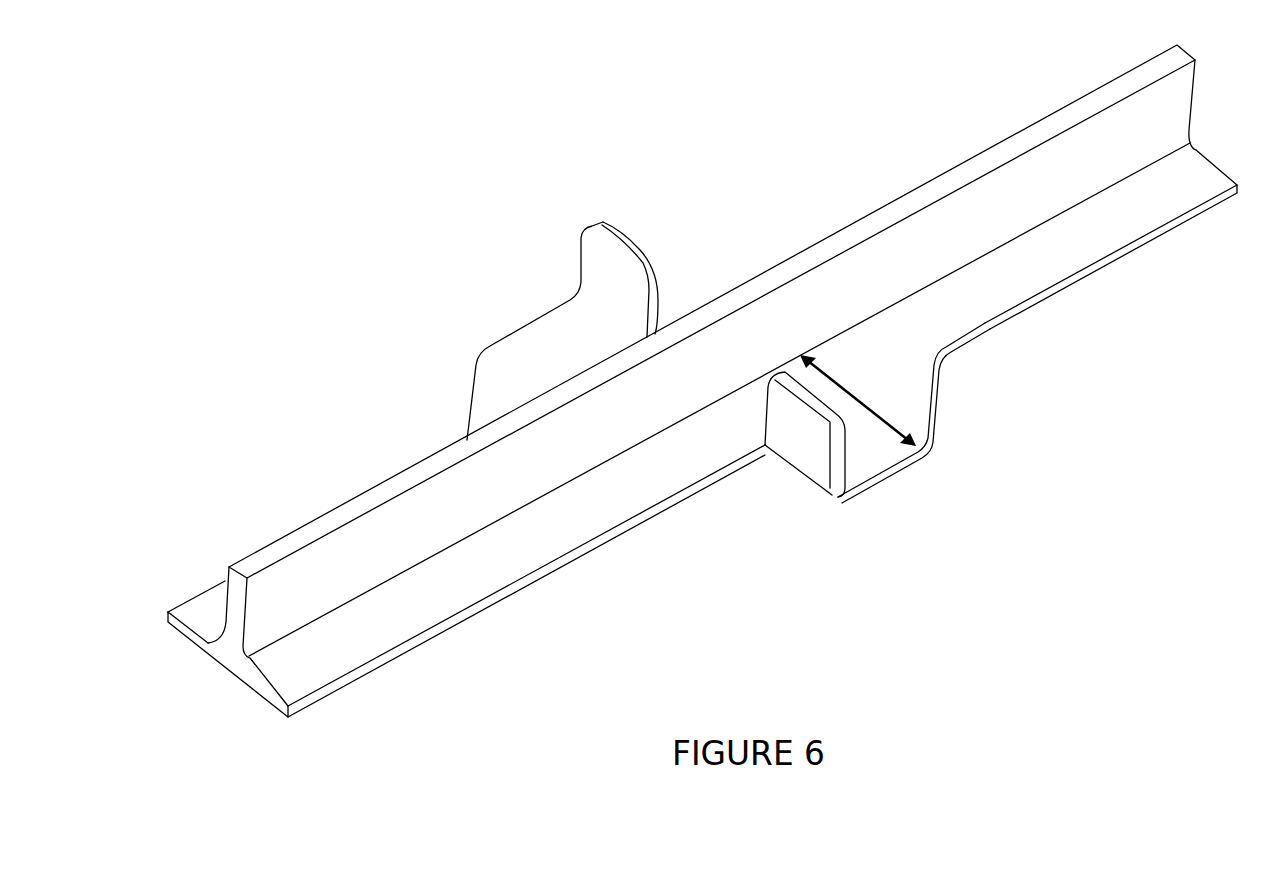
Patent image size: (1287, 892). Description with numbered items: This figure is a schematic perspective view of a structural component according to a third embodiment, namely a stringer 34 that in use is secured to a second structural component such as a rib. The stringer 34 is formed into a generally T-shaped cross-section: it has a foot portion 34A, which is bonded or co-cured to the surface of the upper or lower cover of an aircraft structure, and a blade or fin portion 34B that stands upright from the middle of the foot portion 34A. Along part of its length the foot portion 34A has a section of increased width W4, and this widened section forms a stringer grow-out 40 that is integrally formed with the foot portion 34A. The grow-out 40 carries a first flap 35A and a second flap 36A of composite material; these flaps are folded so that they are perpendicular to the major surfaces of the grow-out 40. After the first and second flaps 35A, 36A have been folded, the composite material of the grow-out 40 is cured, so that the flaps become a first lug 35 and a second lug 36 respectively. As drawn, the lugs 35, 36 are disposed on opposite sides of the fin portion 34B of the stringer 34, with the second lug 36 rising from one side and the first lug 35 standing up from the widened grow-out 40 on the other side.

The stringer 34 is at (247, 561).
The foot portion 34A is at (347, 652).
The blade or fin portion 34B is at (317, 576).
The second lug 36 is at (605, 248).
The second flap 36A is at (607, 278).
The first lug 35 is at (827, 455).
The first flap 35A is at (805, 447).
The stringer grow-out 40 is at (866, 445).
The increased width W4 is at (858, 400).